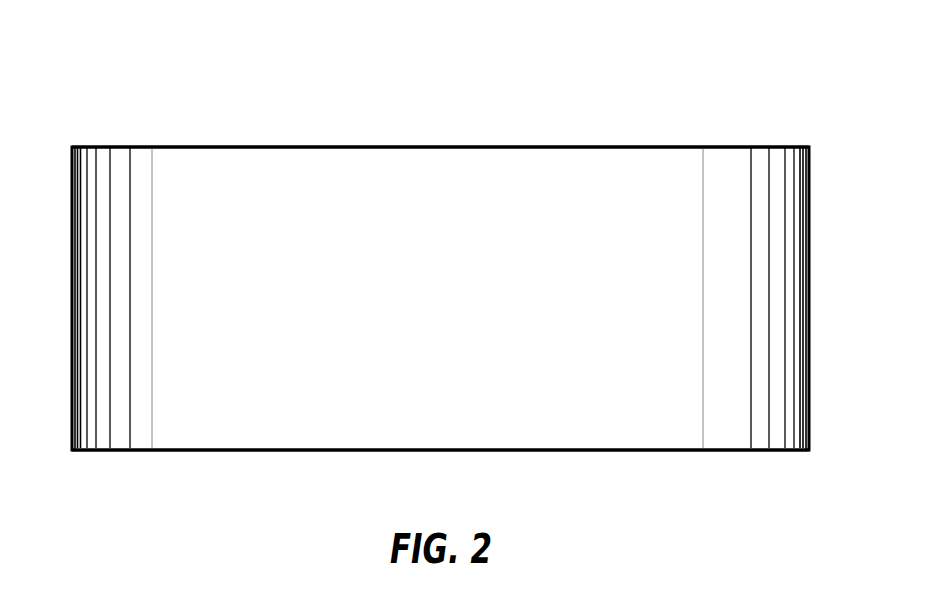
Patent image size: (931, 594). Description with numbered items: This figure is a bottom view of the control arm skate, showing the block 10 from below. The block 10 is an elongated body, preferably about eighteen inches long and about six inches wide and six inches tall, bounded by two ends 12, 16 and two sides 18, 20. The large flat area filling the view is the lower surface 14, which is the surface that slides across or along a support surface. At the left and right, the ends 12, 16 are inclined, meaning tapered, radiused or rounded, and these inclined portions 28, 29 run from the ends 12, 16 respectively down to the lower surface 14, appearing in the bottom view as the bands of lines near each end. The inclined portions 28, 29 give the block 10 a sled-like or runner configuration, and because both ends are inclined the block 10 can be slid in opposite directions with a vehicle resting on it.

The block 10 is at (612, 60).
The end 12 is at (72, 306).
The lower surface 14 is at (447, 300).
The end 16 is at (811, 289).
The side 18 is at (464, 146).
The side 20 is at (340, 452).
The inclined portion 28 is at (122, 172).
The inclined portion 29 is at (761, 172).